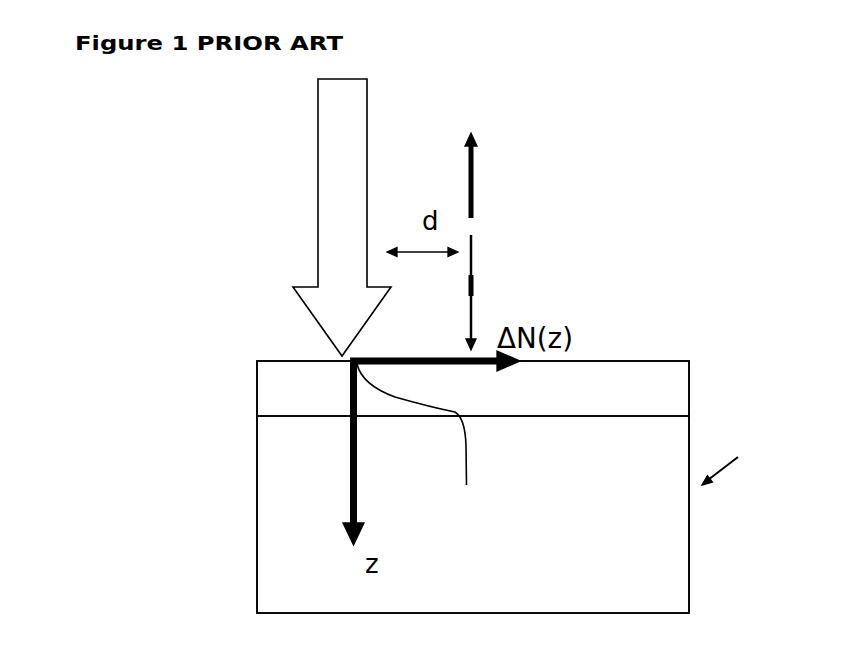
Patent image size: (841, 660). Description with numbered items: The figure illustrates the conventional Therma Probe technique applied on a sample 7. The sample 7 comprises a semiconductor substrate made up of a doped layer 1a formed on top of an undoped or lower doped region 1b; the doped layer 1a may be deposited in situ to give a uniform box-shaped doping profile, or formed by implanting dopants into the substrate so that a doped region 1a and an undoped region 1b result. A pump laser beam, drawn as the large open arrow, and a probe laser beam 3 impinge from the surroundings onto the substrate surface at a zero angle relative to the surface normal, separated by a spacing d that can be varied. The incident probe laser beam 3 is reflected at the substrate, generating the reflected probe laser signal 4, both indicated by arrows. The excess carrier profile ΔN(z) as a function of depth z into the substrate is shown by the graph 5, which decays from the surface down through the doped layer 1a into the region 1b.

The sample 7 is at (233, 408).
The doped layer 1a is at (473, 388).
The undoped or lower doped region 1b is at (473, 514).
The reflected probe laser signal 4 is at (489, 175).
The probe laser beam 3 is at (489, 291).
The graph of excess carrier profile 5 is at (475, 458).